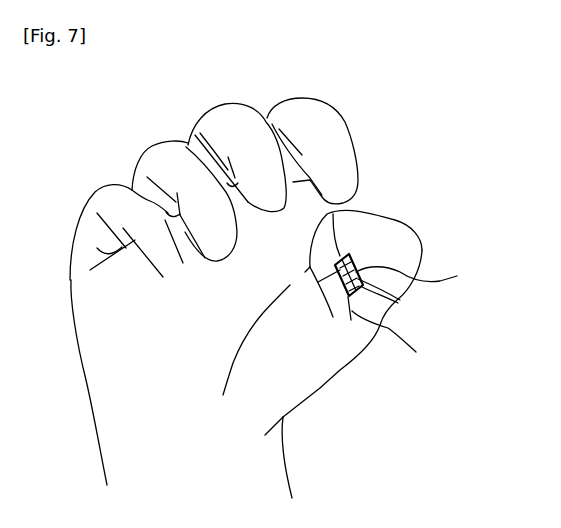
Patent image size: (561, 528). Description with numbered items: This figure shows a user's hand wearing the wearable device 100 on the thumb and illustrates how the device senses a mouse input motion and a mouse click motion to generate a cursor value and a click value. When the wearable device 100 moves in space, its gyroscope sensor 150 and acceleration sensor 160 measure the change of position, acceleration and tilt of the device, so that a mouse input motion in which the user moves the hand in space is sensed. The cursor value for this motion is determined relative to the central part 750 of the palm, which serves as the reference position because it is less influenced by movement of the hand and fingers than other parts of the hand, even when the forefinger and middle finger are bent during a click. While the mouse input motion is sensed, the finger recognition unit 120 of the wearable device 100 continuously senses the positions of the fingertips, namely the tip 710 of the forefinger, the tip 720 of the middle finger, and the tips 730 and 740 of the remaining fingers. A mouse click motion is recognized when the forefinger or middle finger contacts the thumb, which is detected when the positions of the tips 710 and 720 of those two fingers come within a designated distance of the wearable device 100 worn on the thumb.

The tip of the forefinger 710 is at (342, 190).
The tip of the middle finger 720 is at (270, 195).
The tip of the finger 730 is at (217, 242).
The tip of the finger 740 is at (169, 262).
The central part of the palm 750 is at (230, 318).
The wearable device 100 is at (356, 296).
The finger recognition unit 120 is at (347, 255).
The gyroscope sensor 150 is at (420, 275).
The acceleration sensor 160 is at (395, 344).